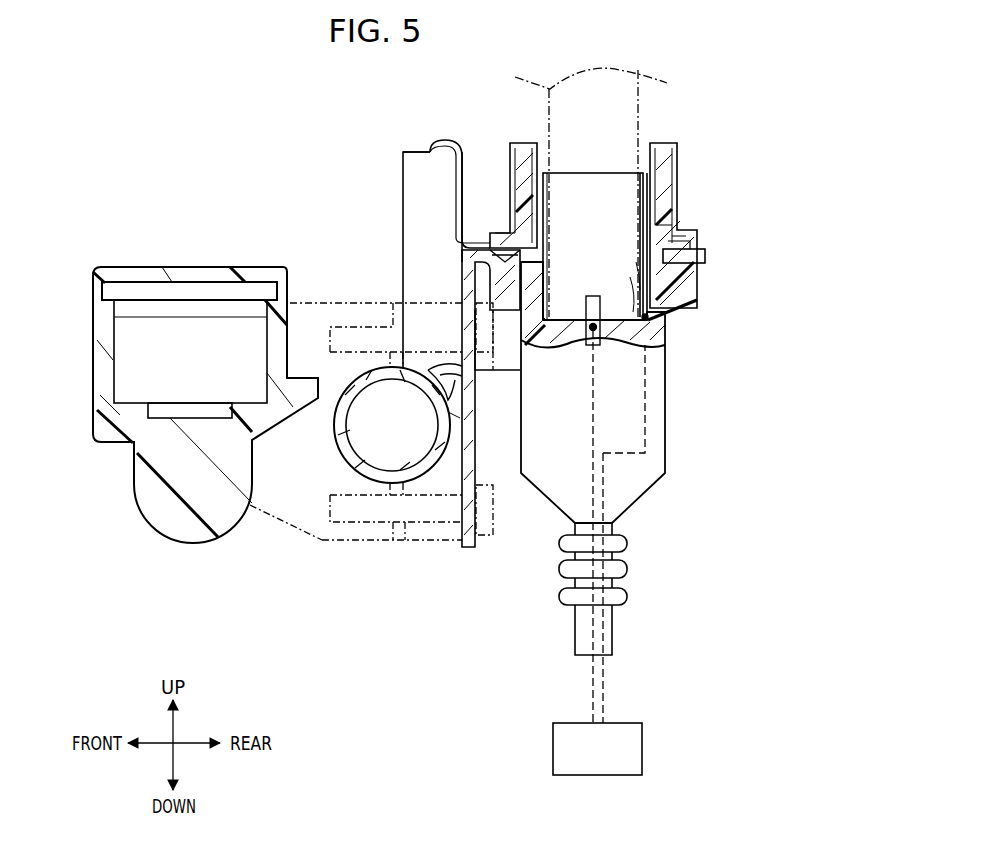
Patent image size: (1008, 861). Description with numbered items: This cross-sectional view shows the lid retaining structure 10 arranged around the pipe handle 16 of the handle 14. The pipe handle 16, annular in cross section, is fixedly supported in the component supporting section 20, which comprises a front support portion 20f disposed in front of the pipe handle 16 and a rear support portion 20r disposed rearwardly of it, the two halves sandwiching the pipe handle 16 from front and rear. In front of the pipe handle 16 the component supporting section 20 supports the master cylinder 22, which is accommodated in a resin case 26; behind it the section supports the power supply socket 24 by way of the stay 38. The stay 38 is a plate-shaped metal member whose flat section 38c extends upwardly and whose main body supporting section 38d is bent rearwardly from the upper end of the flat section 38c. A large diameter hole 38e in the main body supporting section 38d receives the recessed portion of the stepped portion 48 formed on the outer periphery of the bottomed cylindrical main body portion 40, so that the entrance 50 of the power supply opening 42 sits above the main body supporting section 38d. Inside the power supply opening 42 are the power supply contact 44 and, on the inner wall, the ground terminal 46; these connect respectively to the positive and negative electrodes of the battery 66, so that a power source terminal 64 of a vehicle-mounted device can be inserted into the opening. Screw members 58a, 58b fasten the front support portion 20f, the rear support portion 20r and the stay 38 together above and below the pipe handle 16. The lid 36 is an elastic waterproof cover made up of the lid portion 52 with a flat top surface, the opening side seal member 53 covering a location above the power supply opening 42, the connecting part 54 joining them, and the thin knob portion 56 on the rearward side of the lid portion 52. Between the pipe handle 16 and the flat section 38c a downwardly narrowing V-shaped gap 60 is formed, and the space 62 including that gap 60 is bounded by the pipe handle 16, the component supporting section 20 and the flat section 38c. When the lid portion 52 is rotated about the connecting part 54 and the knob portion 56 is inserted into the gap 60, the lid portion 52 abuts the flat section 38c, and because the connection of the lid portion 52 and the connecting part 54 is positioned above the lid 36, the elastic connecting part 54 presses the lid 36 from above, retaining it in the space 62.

The lid retaining structure 10 is at (318, 268).
The handle 14 is at (334, 422).
The pipe handle 16 is at (356, 433).
The component supporting section 20 is at (376, 452).
The front support portion 20f is at (362, 542).
The rear support portion 20r is at (418, 542).
The master cylinder 22 is at (113, 315).
The power supply socket 24 is at (690, 148).
The resin case 26 is at (92, 372).
The lid 36 is at (403, 171).
The stay 38 is at (706, 243).
The flat section 38c is at (461, 290).
The main body supporting section 38d is at (701, 258).
The large diameter hole 38e is at (636, 262).
The main body portion 40 is at (665, 400).
The power supply opening 42 is at (639, 273).
The power supply contact 44 is at (585, 318).
The ground terminal 46 is at (680, 313).
The stepped portion 48 is at (497, 247).
The entrance 50 is at (547, 168).
The lid portion 52 is at (421, 208).
The opening side seal member 53 is at (526, 143).
The connecting part 54 is at (440, 148).
The knob portion 56 is at (458, 393).
The screw member 58a is at (358, 326).
The screw member 58b is at (440, 541).
The gap 60 is at (458, 428).
The space 62 is at (496, 372).
The power source terminal 64 is at (650, 104).
The battery 66 is at (645, 750).